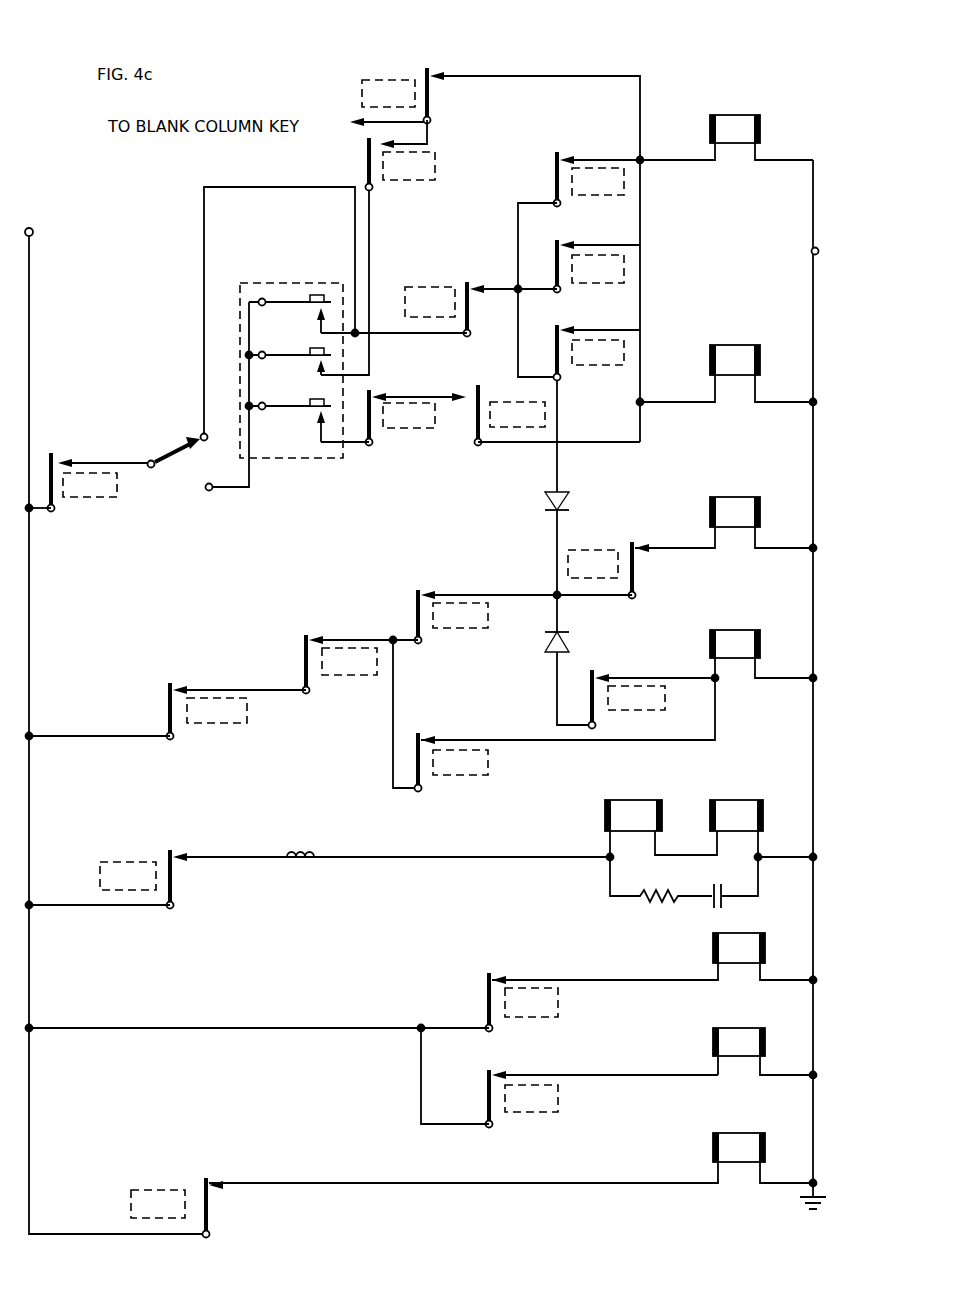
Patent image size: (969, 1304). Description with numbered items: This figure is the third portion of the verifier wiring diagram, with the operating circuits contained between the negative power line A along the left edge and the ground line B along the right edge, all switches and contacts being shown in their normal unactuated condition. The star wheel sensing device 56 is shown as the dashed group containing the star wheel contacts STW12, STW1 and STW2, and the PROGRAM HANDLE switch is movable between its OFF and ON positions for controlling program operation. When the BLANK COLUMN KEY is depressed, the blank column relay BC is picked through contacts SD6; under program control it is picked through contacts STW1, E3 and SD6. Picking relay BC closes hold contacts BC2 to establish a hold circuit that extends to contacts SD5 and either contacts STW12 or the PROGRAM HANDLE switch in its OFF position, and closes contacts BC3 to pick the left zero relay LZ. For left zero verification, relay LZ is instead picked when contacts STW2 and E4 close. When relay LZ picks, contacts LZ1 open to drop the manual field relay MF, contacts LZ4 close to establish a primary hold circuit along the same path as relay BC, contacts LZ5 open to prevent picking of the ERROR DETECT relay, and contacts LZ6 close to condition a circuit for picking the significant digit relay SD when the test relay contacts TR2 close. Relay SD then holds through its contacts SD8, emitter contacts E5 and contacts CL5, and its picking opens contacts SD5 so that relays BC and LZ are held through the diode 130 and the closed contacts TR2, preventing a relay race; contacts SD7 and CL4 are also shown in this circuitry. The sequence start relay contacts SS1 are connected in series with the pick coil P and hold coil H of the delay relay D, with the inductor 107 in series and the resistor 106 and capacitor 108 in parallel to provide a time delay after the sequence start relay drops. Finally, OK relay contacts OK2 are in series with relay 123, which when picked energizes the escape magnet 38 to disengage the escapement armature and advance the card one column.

The negative power line A is at (33, 229).
The ground line B is at (811, 251).
The star wheel sensing device 56 is at (297, 378).
The diode 130 is at (544, 500).
The inductor 107 is at (298, 852).
The resistor 106 is at (661, 890).
The capacitor 108 is at (716, 886).
The relay 123 is at (713, 946).
The escape magnet 38 is at (725, 1034).
The delay relay D is at (497, 811).
The pick coil of delay relay P is at (633, 815).
The hold coil of delay relay H is at (710, 812).
The blank column relay BC is at (726, 137).
The left zero relay LZ is at (725, 375).
The significant digit relay SD is at (617, 685).
The manual field relay MF is at (511, 1158).
The error detect relay ERROR DETECT is at (793, 488).
The significant digit relay contacts SD6 is at (432, 72).
The emitter relay contacts E3 is at (383, 142).
The blank column relay hold contacts BC2 is at (566, 156).
The blank column relay contacts BC3 is at (566, 243).
The significant digit relay contacts SD5 is at (476, 285).
The left zero relay hold contacts LZ4 is at (566, 327).
The emitter relay contacts E4 is at (375, 392).
The significant digit relay contacts SD7 is at (470, 392).
The left zero relay contacts LZ5 is at (636, 543).
The test relay contacts TR2 is at (425, 593).
The emitter relay contacts E5 is at (312, 637).
The card lever relay contacts CL5 is at (178, 686).
The significant digit relay hold contacts SD8 is at (428, 738).
The left zero relay contacts LZ6 is at (602, 677).
The sequence start relay contacts SS1 is at (178, 852).
The OK relay contacts OK2 is at (503, 977).
The left zero relay contacts LZ1 is at (212, 1180).
The card lever relay contacts CL4 is at (53, 482).
The 12 star wheel contacts STW12 is at (320, 293).
The 1 star wheel contacts STW1 is at (320, 347).
The 2 star wheel contacts STW2 is at (320, 398).
The PROGRAM HANDLE switch PROGRAM HANDLE is at (160, 455).